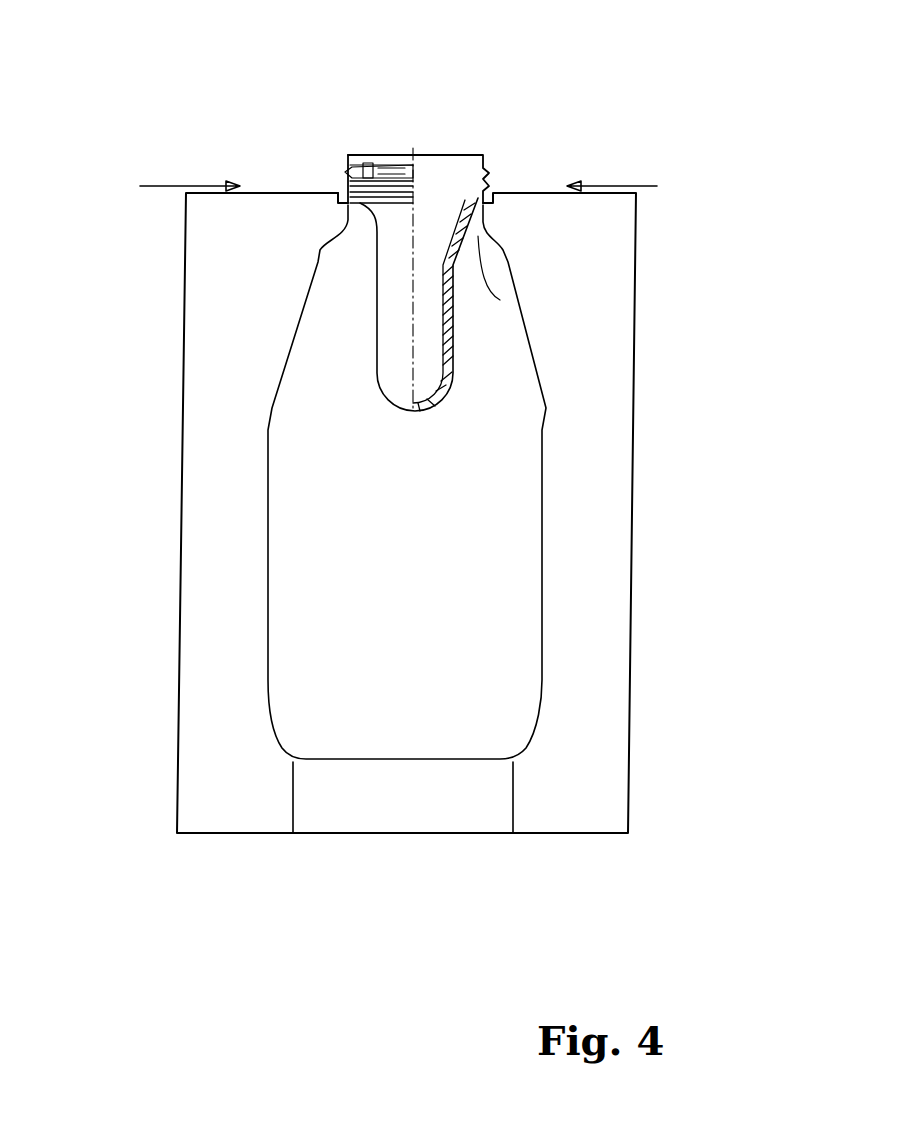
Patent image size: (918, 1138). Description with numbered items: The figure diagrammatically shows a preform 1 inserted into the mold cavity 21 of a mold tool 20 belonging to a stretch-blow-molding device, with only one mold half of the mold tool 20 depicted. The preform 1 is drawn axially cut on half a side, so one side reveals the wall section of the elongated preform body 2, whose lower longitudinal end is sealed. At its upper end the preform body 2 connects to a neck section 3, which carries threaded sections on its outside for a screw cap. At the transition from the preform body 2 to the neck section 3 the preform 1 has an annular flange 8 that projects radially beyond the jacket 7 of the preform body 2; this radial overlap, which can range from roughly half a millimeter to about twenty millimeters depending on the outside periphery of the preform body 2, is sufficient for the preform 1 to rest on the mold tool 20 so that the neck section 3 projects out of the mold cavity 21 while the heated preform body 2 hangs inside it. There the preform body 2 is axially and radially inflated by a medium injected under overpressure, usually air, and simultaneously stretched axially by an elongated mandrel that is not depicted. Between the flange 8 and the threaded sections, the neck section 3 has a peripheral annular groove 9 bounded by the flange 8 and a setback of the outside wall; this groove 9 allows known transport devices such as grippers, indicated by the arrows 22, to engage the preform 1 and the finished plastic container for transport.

The preform 1 is at (395, 279).
The preform body 2 is at (447, 365).
The neck section 3 is at (373, 165).
The jacket 7 is at (500, 300).
The flange 8 is at (345, 197).
The annular groove 9 is at (494, 200).
The mold tool 20 is at (197, 470).
The mold cavity 21 is at (300, 637).
The arrows 22 is at (187, 185).